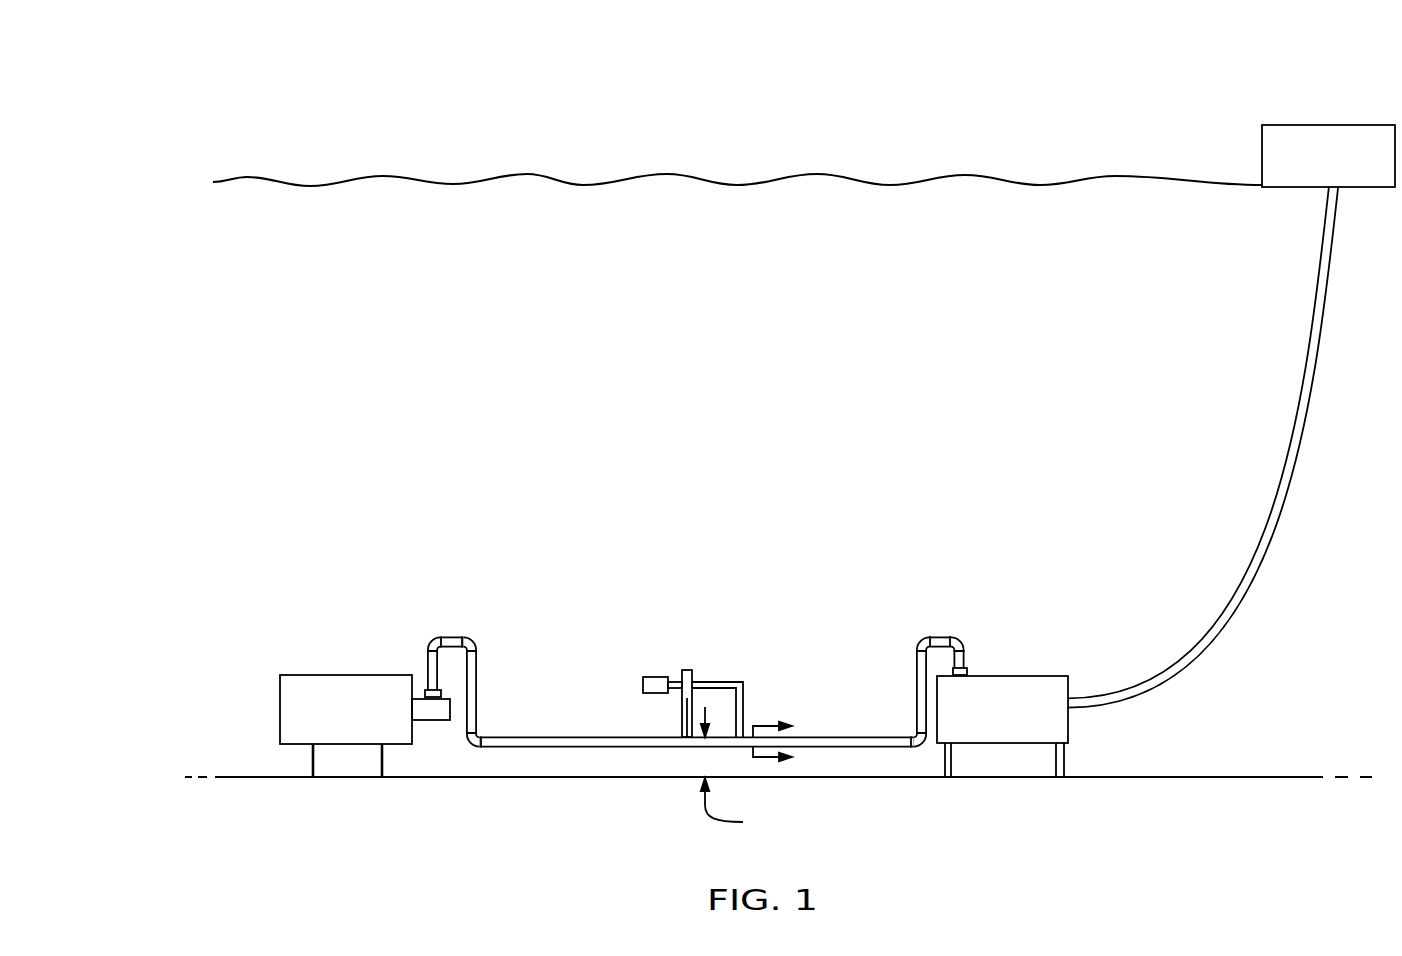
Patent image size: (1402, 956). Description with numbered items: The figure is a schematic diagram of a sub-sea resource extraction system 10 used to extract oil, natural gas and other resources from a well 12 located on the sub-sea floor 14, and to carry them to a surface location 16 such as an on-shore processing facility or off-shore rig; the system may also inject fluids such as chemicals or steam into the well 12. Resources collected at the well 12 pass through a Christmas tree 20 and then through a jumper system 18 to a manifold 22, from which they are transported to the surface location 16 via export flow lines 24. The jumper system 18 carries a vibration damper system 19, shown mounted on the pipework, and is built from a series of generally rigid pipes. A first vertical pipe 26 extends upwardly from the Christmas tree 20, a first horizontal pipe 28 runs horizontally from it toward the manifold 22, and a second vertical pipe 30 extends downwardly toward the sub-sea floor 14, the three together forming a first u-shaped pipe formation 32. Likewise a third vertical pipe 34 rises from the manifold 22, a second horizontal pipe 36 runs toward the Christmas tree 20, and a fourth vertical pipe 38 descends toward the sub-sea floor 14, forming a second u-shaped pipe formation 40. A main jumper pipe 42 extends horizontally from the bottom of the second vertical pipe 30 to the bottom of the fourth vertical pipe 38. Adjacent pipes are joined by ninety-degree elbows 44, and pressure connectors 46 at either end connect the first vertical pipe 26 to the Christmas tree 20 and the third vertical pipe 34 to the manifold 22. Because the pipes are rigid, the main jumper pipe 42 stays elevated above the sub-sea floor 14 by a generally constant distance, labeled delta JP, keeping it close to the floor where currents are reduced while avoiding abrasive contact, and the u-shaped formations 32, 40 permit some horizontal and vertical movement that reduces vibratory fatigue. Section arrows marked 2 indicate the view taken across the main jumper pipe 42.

The sub-sea resource extraction system 10 is at (252, 93).
The well 12 is at (237, 752).
The sub-sea floor 14 is at (1280, 778).
The surface location 16 is at (1330, 123).
The jumper system 18 is at (692, 666).
The vibration damper system 19 is at (755, 653).
The Christmas tree 20 is at (307, 675).
The manifold 22 is at (1053, 675).
The export flow lines 24 is at (1299, 418).
The first vertical pipe 26 is at (428, 668).
The first horizontal pipe 28 is at (452, 637).
The second vertical pipe 30 is at (473, 688).
The first u-shaped pipe formation 32 is at (447, 645).
The third vertical pipe 34 is at (963, 660).
The second horizontal pipe 36 is at (937, 637).
The fourth vertical pipe 38 is at (917, 688).
The second u-shaped pipe formation 40 is at (942, 630).
The main jumper pipe 42 is at (613, 737).
The 90-degree elbows 44 is at (430, 637).
The pressure connectors 46 is at (432, 700).
The section line for FIG. 2 is at (782, 733).